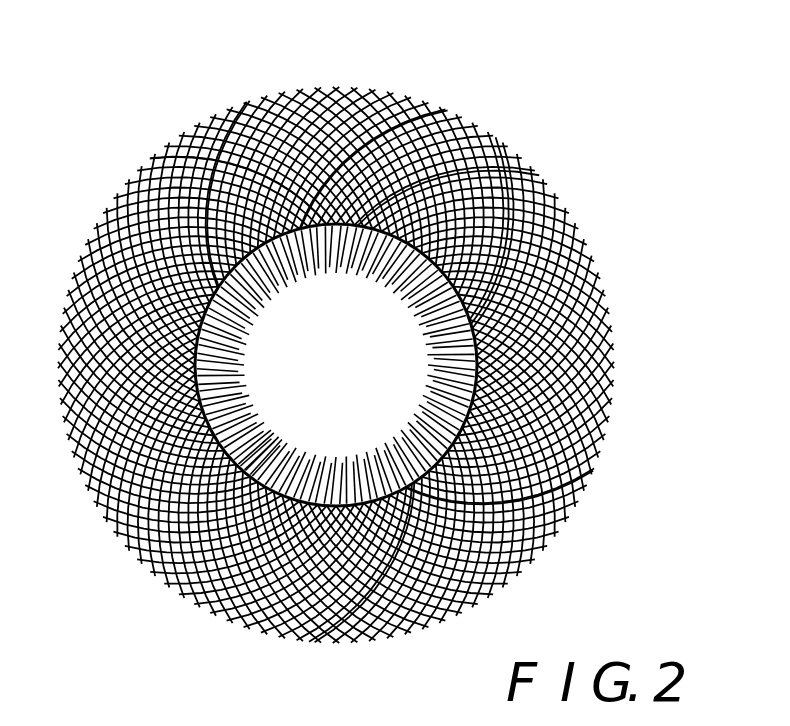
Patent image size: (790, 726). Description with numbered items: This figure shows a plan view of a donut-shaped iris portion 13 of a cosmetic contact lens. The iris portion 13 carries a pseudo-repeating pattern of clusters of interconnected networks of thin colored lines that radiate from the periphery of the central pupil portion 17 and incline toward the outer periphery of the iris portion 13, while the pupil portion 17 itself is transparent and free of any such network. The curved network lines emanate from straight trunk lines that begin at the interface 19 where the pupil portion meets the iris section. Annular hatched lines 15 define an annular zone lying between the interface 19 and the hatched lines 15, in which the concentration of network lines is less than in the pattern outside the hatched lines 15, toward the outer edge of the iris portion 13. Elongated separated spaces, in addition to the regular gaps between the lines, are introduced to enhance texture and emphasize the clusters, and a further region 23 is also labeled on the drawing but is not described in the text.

The tubular braided stent 13 is at (607, 376).
The braided mesh wall 15 is at (396, 214).
The central lumen 17 is at (330, 372).
The end ring 19 is at (366, 268).
The outer region of stent 23 is at (627, 532).